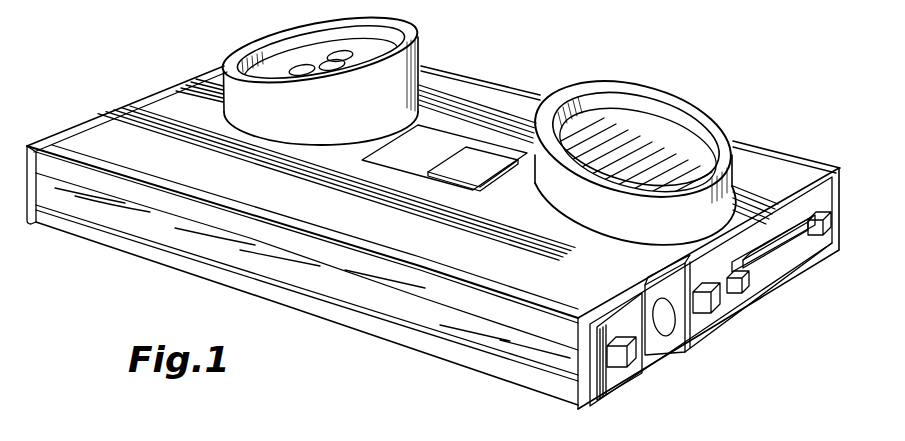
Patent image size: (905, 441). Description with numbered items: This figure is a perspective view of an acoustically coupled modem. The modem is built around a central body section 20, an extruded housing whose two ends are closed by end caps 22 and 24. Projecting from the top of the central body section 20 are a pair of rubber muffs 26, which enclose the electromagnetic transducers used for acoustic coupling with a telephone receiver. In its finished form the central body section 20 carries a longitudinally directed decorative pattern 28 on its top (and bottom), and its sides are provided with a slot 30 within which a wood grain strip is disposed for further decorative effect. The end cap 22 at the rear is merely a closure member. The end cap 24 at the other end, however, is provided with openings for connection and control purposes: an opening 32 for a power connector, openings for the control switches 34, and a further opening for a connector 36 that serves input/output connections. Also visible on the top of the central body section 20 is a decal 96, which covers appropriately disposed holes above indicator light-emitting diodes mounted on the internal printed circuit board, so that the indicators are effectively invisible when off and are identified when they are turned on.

The central body section 20 is at (420, 343).
The end cap 22 is at (181, 78).
The end cap 24 is at (818, 170).
The rubber muffs 26 is at (418, 53).
The decorative pattern 28 is at (293, 167).
The slot 30 is at (480, 340).
The opening 32 is at (661, 333).
The control switches 34 is at (632, 366).
The connector 36 is at (778, 240).
The decal 96 is at (470, 157).